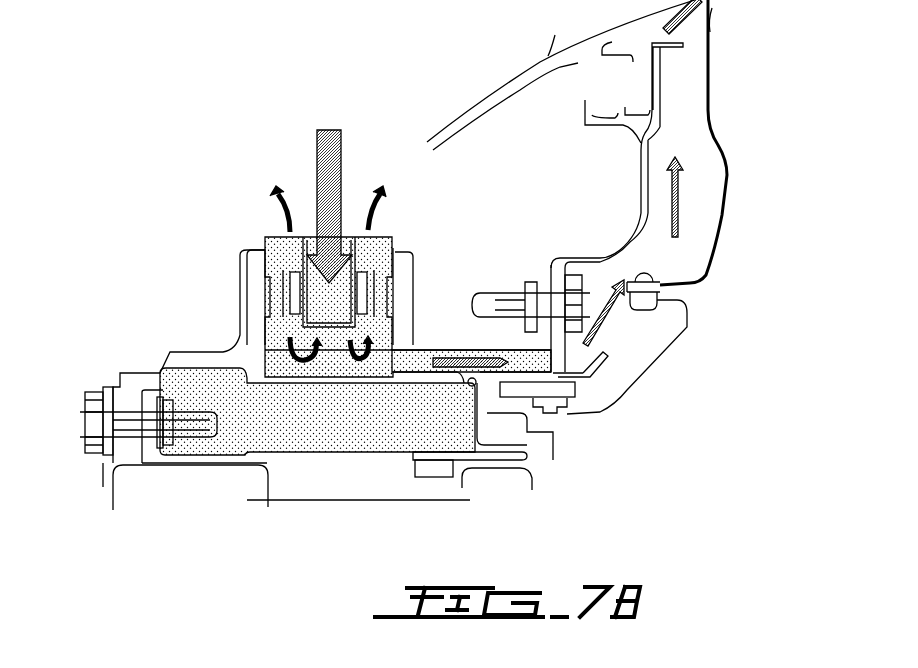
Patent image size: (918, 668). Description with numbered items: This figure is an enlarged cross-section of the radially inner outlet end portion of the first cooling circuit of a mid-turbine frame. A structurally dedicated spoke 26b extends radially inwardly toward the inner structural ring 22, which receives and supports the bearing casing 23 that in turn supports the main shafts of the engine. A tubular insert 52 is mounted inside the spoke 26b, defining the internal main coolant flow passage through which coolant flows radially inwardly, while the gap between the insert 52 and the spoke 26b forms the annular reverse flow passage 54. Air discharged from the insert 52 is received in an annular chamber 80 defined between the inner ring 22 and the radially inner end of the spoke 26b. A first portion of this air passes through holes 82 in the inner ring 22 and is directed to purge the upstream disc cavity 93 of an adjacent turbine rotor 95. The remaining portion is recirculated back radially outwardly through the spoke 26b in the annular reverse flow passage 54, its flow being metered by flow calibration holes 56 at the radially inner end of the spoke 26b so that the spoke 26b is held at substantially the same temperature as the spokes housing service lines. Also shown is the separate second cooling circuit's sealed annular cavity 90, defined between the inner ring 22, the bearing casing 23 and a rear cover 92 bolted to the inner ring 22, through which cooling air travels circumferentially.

The inner structural ring 22 is at (171, 355).
The bearing casing 23 is at (157, 458).
The structurally dedicated spoke 26b is at (273, 248).
The tubular insert 52 is at (346, 243).
The annular reverse flow passage 54 is at (388, 237).
The flow calibration holes 56 is at (372, 300).
The annular chamber 80 is at (330, 360).
The holes 82 is at (410, 352).
The annular cavity 90 is at (242, 432).
The rear cover 92 is at (525, 415).
The upstream disc cavity 93 is at (710, 145).
The turbine rotor 95 is at (713, 20).